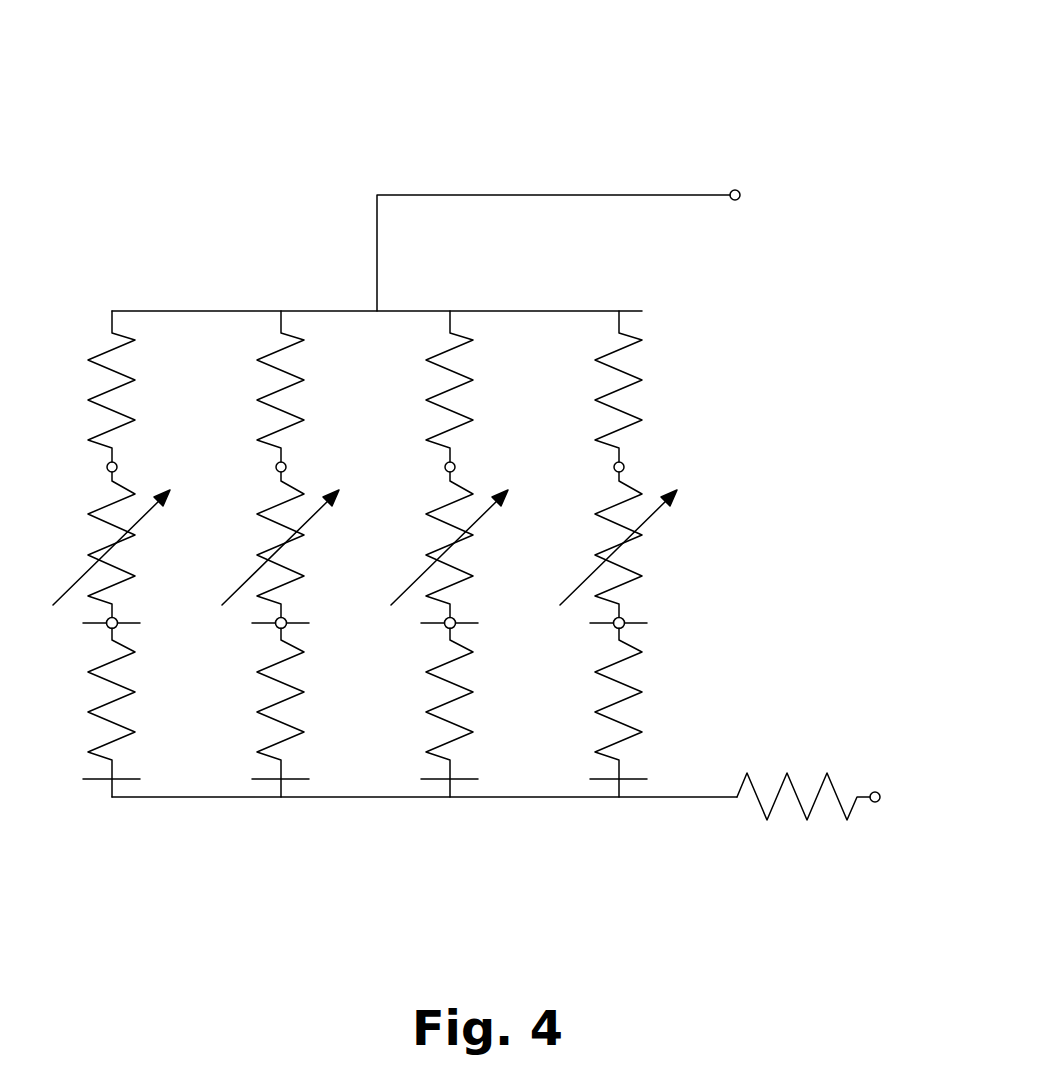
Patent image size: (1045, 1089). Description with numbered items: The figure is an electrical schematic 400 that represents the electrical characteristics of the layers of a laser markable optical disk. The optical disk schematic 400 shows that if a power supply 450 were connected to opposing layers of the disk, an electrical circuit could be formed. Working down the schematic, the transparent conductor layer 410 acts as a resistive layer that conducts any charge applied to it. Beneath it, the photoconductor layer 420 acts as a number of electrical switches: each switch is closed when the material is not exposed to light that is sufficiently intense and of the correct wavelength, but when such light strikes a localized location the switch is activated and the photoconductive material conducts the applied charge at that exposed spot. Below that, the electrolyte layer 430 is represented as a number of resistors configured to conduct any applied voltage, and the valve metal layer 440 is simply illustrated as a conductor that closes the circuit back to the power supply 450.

The optical disk schematic 400 is at (473, 454).
The transparent conductor layer 410 is at (698, 382).
The photoconductor layer 420 is at (698, 543).
The electrolyte layer 430 is at (707, 692).
The valve metal layer 440 is at (552, 797).
The power supply 450 is at (697, 194).